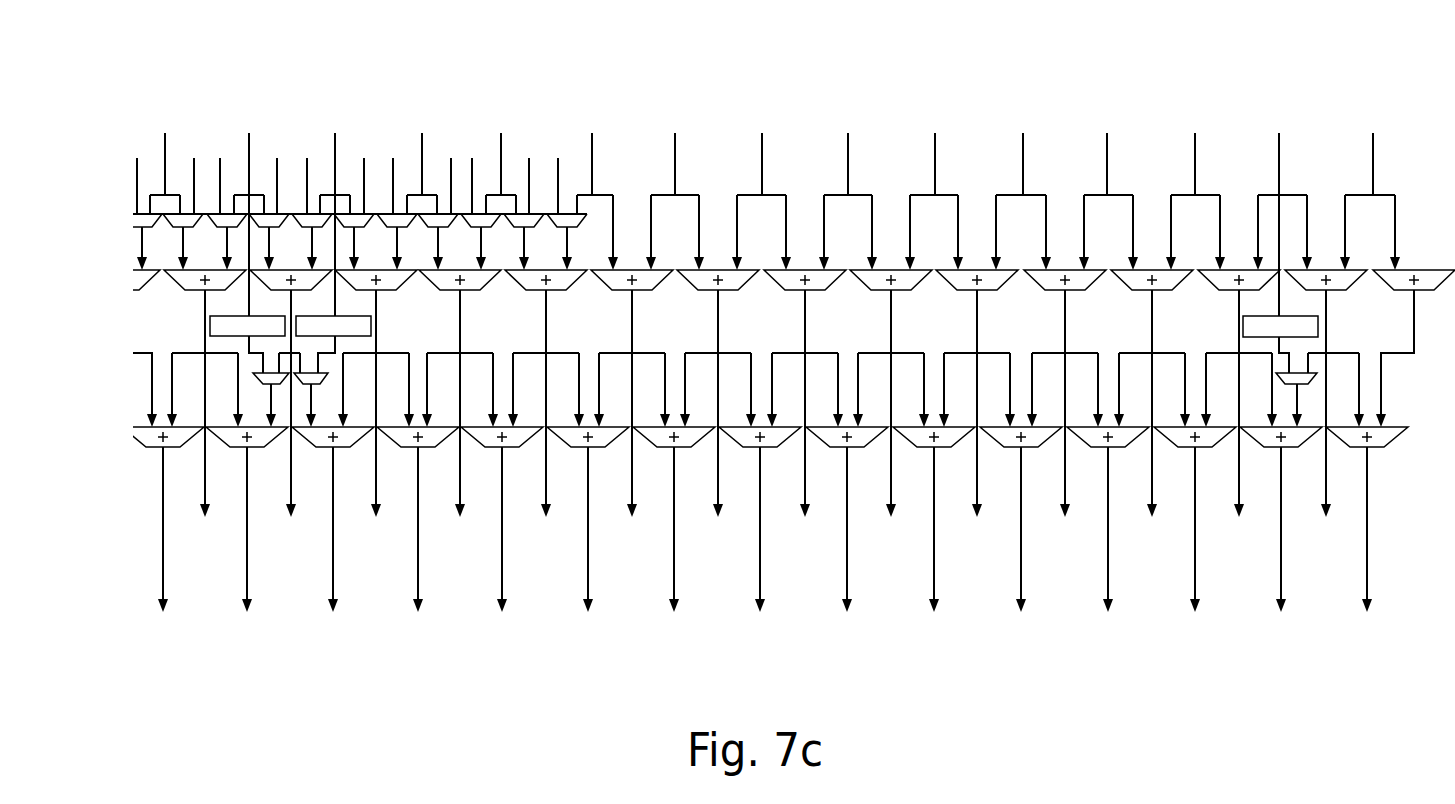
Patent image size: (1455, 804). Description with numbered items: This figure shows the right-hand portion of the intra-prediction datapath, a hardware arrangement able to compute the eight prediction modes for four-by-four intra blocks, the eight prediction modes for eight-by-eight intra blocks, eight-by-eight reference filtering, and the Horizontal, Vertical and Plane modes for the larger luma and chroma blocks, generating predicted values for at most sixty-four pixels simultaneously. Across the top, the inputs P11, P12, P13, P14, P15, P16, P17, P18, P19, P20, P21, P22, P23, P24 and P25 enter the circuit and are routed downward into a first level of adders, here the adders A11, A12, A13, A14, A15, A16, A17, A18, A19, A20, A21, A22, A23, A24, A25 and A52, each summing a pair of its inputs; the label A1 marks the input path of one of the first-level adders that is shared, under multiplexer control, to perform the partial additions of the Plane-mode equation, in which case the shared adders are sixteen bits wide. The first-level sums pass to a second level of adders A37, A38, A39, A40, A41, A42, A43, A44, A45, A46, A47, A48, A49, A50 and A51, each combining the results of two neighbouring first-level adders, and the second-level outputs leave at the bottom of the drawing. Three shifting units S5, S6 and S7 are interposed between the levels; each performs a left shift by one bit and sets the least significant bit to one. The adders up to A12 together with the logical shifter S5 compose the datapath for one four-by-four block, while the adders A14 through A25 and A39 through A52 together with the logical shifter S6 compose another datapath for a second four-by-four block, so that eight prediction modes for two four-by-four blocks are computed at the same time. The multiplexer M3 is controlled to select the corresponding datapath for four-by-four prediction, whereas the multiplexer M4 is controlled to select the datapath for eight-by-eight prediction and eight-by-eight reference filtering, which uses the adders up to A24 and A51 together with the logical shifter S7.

The input pixel P11 is at (169, 146).
The input pixel P12 is at (254, 197).
The input pixel P13 is at (341, 197).
The input pixel P14 is at (427, 146).
The input pixel P15 is at (509, 146).
The input pixel P16 is at (598, 174).
The input pixel P17 is at (675, 174).
The input pixel P18 is at (762, 174).
The input pixel P19 is at (848, 174).
The input pixel P20 is at (948, 136).
The input pixel P21 is at (1021, 174).
The input pixel P22 is at (1108, 174).
The input pixel P23 is at (1195, 174).
The input pixel P24 is at (1282, 197).
The input pixel P25 is at (1370, 174).
The first-level adder A1 is at (934, 232).
The first-level adder A11 is at (119, 348).
The first-level adder A12 is at (205, 393).
The first-level adder A13 is at (291, 393).
The first-level adder A14 is at (376, 393).
The first-level adder A15 is at (460, 393).
The first-level adder A16 is at (546, 393).
The first-level adder A17 is at (632, 393).
The first-level adder A18 is at (718, 393).
The first-level adder A19 is at (805, 393).
The first-level adder A20 is at (891, 393).
The first-level adder A21 is at (977, 393).
The first-level adder A22 is at (1065, 393).
The first-level adder A23 is at (1152, 393).
The first-level adder A24 is at (1239, 393).
The first-level adder A25 is at (1326, 393).
The first-level adder A52 is at (1414, 348).
The logical shifter S5 is at (247, 344).
The logical shifter S6 is at (333, 344).
The logical shifter S7 is at (1280, 344).
The multiplexer M3 is at (264, 400).
The multiplexer M4 is at (1299, 400).
The second-level adder A37 is at (163, 519).
The second-level adder A38 is at (247, 519).
The second-level adder A39 is at (333, 519).
The second-level adder A40 is at (418, 519).
The second-level adder A41 is at (502, 519).
The second-level adder A42 is at (588, 519).
The second-level adder A43 is at (674, 519).
The second-level adder A44 is at (760, 519).
The second-level adder A45 is at (847, 519).
The second-level adder A46 is at (934, 519).
The second-level adder A47 is at (1021, 519).
The second-level adder A48 is at (1108, 519).
The second-level adder A49 is at (1195, 519).
The second-level adder A50 is at (1281, 519).
The second-level adder A51 is at (1367, 519).